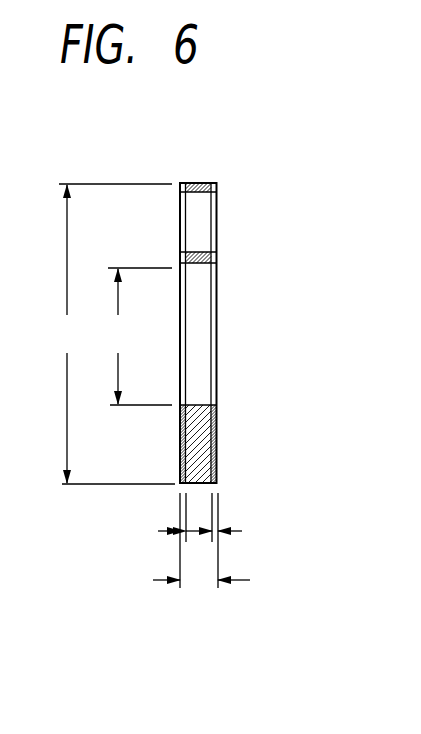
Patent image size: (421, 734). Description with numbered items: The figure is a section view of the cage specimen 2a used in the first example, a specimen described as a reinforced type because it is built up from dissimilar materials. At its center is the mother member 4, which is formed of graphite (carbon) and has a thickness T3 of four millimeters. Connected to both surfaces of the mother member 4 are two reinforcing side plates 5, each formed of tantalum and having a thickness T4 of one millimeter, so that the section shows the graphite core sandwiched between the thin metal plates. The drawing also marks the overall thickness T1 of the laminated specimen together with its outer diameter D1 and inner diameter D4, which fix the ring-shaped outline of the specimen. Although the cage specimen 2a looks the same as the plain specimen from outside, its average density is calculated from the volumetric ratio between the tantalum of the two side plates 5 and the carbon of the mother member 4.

The cage specimen 2a is at (178, 170).
The mother member 4 is at (192, 402).
The reinforcing side plate 5 is at (180, 432).
The outer diameter D1 is at (113, 334).
The inner diameter D4 is at (137, 336).
The overall thickness T1 is at (201, 584).
The thickness of mother member T3 is at (200, 530).
The thickness of side plate T4 is at (247, 540).